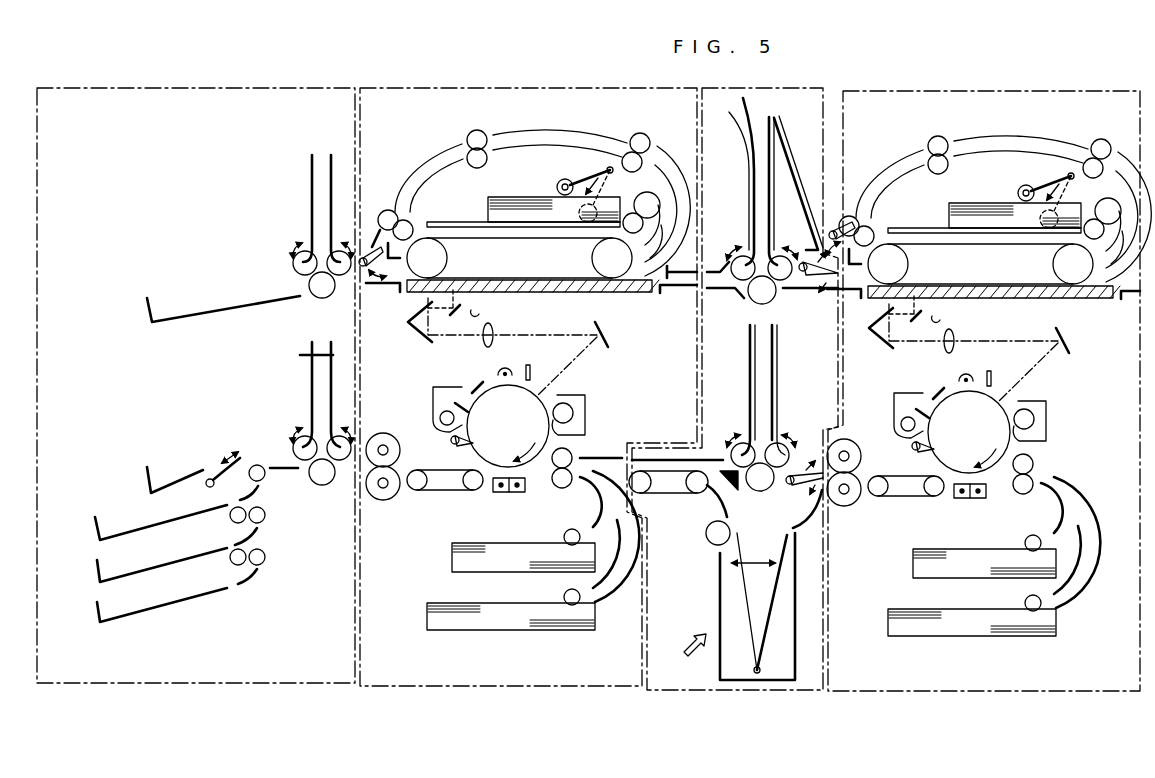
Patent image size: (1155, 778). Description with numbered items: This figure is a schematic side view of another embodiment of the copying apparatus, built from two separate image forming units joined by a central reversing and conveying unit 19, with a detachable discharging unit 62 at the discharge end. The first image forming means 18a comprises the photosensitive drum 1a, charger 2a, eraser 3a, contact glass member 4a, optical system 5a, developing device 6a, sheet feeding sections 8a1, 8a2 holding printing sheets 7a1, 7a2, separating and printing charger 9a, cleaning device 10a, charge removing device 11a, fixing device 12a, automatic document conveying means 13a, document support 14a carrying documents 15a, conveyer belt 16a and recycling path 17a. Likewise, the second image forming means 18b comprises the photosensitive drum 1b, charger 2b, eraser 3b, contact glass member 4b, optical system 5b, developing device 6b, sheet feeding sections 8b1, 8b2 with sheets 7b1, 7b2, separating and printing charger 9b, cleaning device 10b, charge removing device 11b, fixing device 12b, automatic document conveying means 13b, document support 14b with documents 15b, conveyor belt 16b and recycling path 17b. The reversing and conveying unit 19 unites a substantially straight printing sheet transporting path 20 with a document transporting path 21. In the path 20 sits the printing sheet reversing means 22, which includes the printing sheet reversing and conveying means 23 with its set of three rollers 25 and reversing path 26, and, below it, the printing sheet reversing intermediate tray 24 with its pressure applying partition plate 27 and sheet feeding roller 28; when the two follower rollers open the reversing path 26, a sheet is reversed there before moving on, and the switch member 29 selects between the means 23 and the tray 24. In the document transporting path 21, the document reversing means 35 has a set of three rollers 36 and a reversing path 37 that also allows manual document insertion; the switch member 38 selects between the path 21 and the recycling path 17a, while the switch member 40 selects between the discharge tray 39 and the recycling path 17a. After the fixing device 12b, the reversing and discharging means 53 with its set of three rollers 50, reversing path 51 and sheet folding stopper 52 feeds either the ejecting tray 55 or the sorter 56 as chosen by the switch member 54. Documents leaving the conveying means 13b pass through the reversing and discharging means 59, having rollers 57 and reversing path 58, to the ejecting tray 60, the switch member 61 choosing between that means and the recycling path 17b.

The photosensitive drum 1a is at (996, 419).
The photosensitive drum 1b is at (472, 453).
The charger 2a is at (945, 365).
The charger 2b is at (500, 370).
The eraser 3a is at (1006, 367).
The eraser 3b is at (538, 355).
The contact glass member 4a is at (994, 314).
The contact glass member 4b is at (608, 292).
The optical system 5a is at (969, 331).
The optical system 5b is at (467, 332).
The developing device 6a is at (1056, 413).
The developing device 6b is at (575, 393).
The paper feed cassette 7a1 is at (973, 545).
The paper feed cassette 7a2 is at (972, 635).
The paper feed cassette 7b1 is at (457, 548).
The paper feed cassette 7b2 is at (463, 625).
The sheet feeding section 8a1 is at (993, 543).
The sheet feeding section 8a2 is at (1005, 649).
The sheet feeding section 8b1 is at (495, 560).
The sheet feeding section 8b2 is at (515, 618).
The separating and printing charger 9a is at (982, 508).
The separating and printing charger 9b is at (518, 493).
The cleaning device 10a is at (889, 410).
The cleaning device 10b is at (432, 393).
The charge removing device 11a is at (903, 377).
The charge removing device 11b is at (473, 382).
The fixing device 12a is at (854, 493).
The fixing device 12b is at (385, 500).
The automatic document conveying means 13a is at (893, 200).
The automatic document conveying means 13b is at (473, 237).
The document support 14a is at (984, 164).
The document support 14b is at (510, 222).
The document 15a is at (1014, 161).
The original stack 15b is at (540, 198).
The conveyer belt 16a is at (972, 201).
The conveyor belt 16b is at (455, 245).
The recycling path 17a is at (1052, 168).
The recycling path 17b is at (595, 133).
The first image forming means 18a is at (984, 424).
The second image forming means 18b is at (478, 688).
The reversing and conveying unit 19 is at (733, 692).
The printing sheet transporting path 20 is at (665, 466).
The document transporting path 21 is at (712, 270).
The printing sheet reversing means 22 is at (683, 656).
The printing sheet reversing and conveying means 23 is at (752, 370).
The printing sheet reversing intermediate tray 24 is at (797, 616).
The set of three rollers 25 is at (735, 440).
The reversing path 26 is at (750, 340).
The pressure applying partition plate 27 is at (775, 548).
The sheet feeding roller 28 is at (707, 526).
The switch member 29 is at (812, 500).
The document reversing means 35 is at (760, 195).
The set of three rollers 36 is at (776, 300).
The reversing path 37 is at (755, 152).
The switch member 38 is at (806, 277).
The discharge tray 39 is at (782, 145).
The switch member 40 is at (834, 231).
The set of three rollers 50 is at (320, 486).
The reversing path 51 is at (312, 370).
The sheet folding stopper 52 is at (300, 355).
The reversing and discharging means 53 is at (305, 410).
The switch member 54 is at (212, 478).
The ejecting tray 55 is at (105, 480).
The sorter 56 is at (185, 565).
The set of three rollers 57 is at (330, 292).
The reversing path 58 is at (312, 210).
The reversing and discharging means 59 is at (310, 170).
The ejecting tray 60 is at (203, 308).
The switch member 61 is at (363, 257).
The original handling unit 62 is at (243, 685).